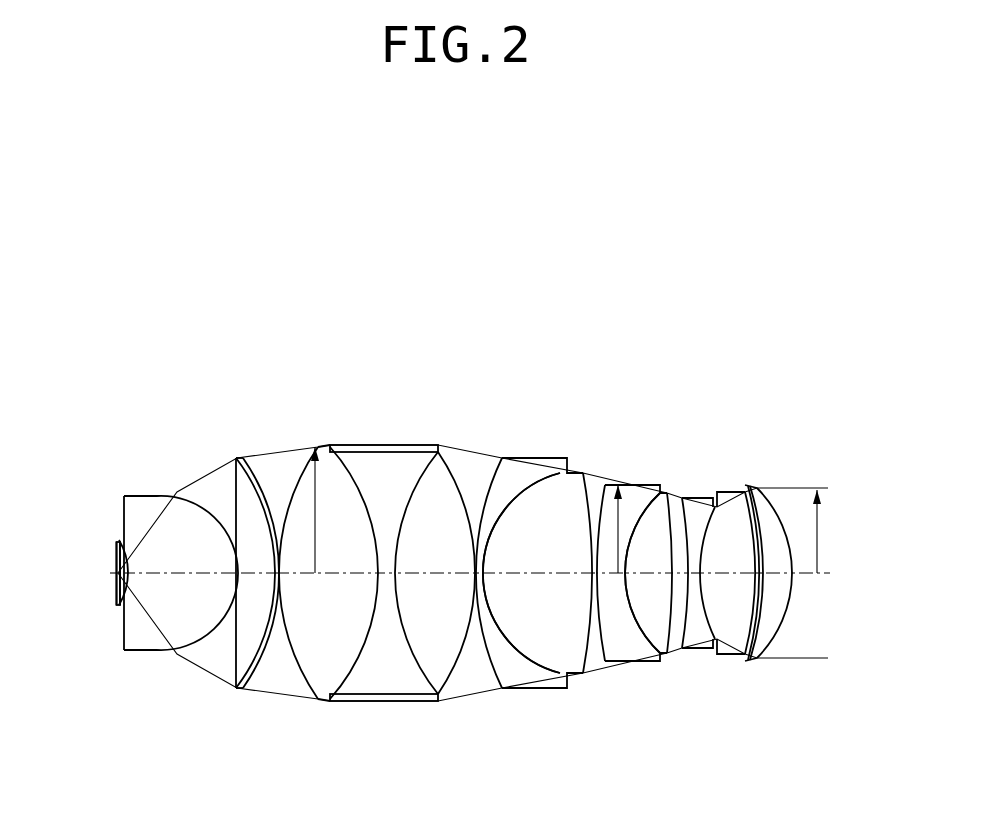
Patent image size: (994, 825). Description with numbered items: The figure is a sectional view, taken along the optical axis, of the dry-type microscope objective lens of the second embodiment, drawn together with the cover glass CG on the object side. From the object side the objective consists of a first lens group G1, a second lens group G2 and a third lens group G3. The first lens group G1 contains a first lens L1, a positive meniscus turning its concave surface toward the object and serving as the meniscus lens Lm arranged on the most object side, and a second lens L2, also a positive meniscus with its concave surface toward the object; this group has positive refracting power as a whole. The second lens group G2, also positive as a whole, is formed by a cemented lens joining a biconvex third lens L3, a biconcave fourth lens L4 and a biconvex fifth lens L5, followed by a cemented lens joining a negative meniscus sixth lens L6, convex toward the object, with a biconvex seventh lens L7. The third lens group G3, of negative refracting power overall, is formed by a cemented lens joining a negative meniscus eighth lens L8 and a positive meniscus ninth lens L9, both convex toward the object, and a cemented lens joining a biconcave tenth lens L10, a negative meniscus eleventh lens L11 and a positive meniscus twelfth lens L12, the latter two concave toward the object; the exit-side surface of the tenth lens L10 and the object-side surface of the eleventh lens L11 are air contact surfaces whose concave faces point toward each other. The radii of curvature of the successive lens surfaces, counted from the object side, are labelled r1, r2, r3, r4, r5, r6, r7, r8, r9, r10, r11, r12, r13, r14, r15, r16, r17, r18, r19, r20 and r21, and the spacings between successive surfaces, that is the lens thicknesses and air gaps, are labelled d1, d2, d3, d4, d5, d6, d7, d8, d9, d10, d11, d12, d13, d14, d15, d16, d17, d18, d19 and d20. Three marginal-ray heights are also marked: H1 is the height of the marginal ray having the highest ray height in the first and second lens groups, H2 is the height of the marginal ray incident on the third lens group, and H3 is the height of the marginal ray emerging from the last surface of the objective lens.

The cover glass CG is at (116, 560).
The first lens group G1 is at (267, 297).
The second lens group G2 is at (605, 297).
The third lens group G3 is at (882, 297).
The first lens L1 is at (177, 477).
The second lens L2 is at (238, 496).
The third lens L3 is at (353, 503).
The fourth lens L4 is at (414, 499).
The fifth lens L5 is at (498, 496).
The sixth lens L6 is at (537, 489).
The seventh lens L7 is at (619, 483).
The eighth lens L8 is at (665, 479).
The ninth lens L9 is at (697, 476).
The tenth lens L10 is at (740, 479).
The eleventh lens L11 is at (788, 483).
The twelfth lens L12 is at (818, 481).
The radius of curvature of first lens surface r1 is at (117, 542).
The radius of curvature of second lens surface r2 is at (119, 545).
The radius of curvature of third lens surface r3 is at (125, 538).
The radius of curvature of fourth lens surface r4 is at (214, 500).
The radius of curvature of fifth lens surface r5 is at (236, 460).
The radius of curvature of sixth lens surface r6 is at (246, 470).
The radius of curvature of seventh lens surface r7 is at (300, 483).
The radius of curvature of eighth lens surface r8 is at (348, 466).
The radius of curvature of ninth lens surface r9 is at (414, 488).
The radius of curvature of tenth lens surface r10 is at (462, 497).
The radius of curvature of eleventh lens surface r11 is at (479, 530).
The radius of curvature of twelfth lens surface r12 is at (540, 484).
The radius of curvature of thirteenth lens surface r13 is at (568, 473).
The radius of curvature of fourteenth lens surface r14 is at (598, 490).
The radius of curvature of fifteenth lens surface r15 is at (667, 500).
The radius of curvature of sixteenth lens surface r16 is at (684, 510).
The radius of curvature of seventeenth lens surface r17 is at (709, 520).
The radius of curvature of eighteenth lens surface r18 is at (749, 505).
The radius of curvature of nineteenth lens surface r19 is at (755, 512).
The radius of curvature of twentieth lens surface r20 is at (760, 520).
The radius of curvature of twenty-first lens surface r21 is at (782, 525).
The first surface spacing d1 is at (118, 578).
The second surface spacing d2 is at (125, 650).
The third surface spacing d3 is at (175, 578).
The fourth surface spacing d4 is at (227, 578).
The fifth surface spacing d5 is at (250, 580).
The sixth surface spacing d6 is at (268, 578).
The seventh surface spacing d7 is at (323, 578).
The eighth surface spacing d8 is at (380, 578).
The ninth surface spacing d9 is at (435, 578).
The tenth surface spacing d10 is at (475, 578).
The eleventh surface spacing d11 is at (493, 578).
The twelfth surface spacing d12 is at (540, 578).
The thirteenth surface spacing d13 is at (602, 578).
The fourteenth surface spacing d14 is at (630, 578).
The fifteenth surface spacing d15 is at (650, 578).
The sixteenth surface spacing d16 is at (675, 578).
The seventeenth surface spacing d17 is at (705, 578).
The eighteenth surface spacing d18 is at (722, 578).
The nineteenth surface spacing d19 is at (748, 578).
The twentieth surface spacing d20 is at (772, 578).
The marginal ray height in first and second lens groups H1 is at (330, 510).
The marginal ray height incident on third lens group H2 is at (617, 516).
The marginal ray height at last surface H3 is at (831, 531).